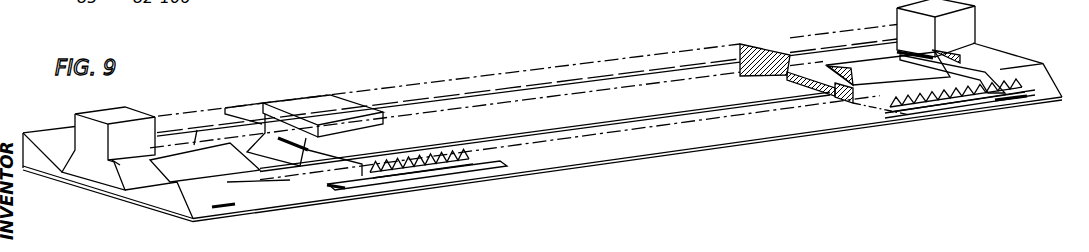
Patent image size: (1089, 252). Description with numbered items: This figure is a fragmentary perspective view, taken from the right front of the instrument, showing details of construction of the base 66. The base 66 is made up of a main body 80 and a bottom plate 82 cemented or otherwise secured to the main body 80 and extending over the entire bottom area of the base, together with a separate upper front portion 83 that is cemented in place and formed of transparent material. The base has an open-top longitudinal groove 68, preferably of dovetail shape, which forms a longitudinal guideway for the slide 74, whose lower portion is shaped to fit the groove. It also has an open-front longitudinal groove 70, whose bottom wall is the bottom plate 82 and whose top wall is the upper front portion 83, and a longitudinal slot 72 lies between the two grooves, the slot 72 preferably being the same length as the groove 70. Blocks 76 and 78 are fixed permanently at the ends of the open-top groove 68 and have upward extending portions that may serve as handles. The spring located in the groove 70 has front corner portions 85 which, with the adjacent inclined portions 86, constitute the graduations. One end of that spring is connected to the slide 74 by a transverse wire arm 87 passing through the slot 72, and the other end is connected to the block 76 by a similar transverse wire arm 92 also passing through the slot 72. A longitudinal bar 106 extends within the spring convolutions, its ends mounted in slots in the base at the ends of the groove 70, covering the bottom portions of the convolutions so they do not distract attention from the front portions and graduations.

The base 66 is at (27, 132).
The open-top longitudinal groove 68 is at (787, 85).
The open-front longitudinal groove 70 is at (857, 110).
The longitudinal slot 72 is at (868, 77).
The slide 74 is at (332, 102).
The block 76 is at (973, 18).
The block 78 is at (82, 127).
The main body 80 is at (50, 165).
The bottom plate 82 is at (128, 200).
The upper front portion 83 is at (117, 163).
The front corner portions 85 is at (403, 187).
The inclined portions 86 is at (467, 160).
The transverse arm 87 is at (328, 158).
The transverse arm 92 is at (982, 67).
The longitudinal bar 106 is at (337, 193).